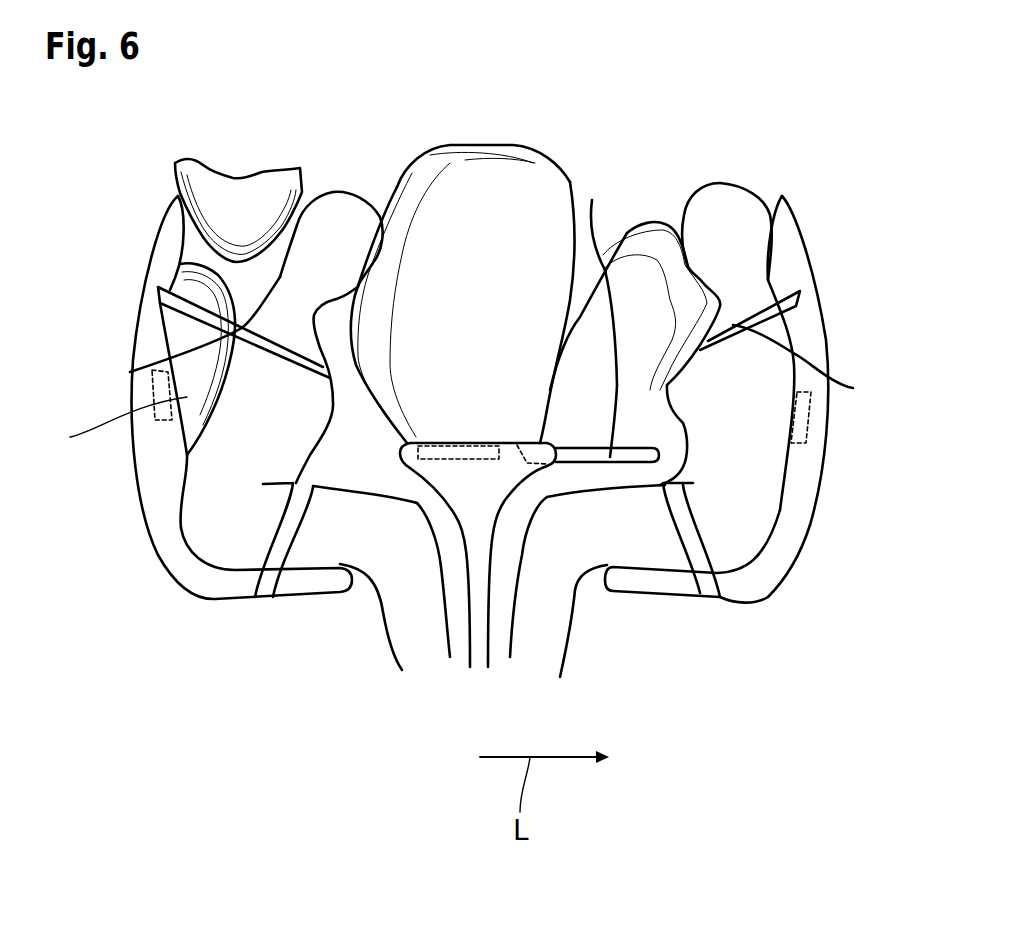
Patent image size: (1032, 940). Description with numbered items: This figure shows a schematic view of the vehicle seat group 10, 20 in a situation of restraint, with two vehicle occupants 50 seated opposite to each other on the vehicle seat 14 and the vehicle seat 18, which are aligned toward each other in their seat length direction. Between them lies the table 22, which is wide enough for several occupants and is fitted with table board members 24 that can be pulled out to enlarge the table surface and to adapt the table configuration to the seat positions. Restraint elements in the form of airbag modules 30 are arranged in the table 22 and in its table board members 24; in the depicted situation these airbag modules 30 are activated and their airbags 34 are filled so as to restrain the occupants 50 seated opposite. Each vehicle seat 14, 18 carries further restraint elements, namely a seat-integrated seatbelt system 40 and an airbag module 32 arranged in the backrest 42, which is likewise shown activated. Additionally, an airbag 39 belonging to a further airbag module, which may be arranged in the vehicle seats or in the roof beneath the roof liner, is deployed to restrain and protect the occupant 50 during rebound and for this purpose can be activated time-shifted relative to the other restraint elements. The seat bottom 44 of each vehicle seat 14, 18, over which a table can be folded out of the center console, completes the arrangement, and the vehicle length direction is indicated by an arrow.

The vehicle seat group 10 is at (360, 742).
The backrest 20 is at (360, 742).
The vehicle seat 14 is at (785, 243).
The vehicle seat 18 is at (167, 240).
The table 22 is at (480, 428).
The table board member 24 is at (592, 200).
The airbag module 30 is at (440, 450).
The airbag module 32 is at (153, 387).
The airbag 34 is at (503, 203).
The airbag 39 is at (233, 185).
The seat-integrated seatbelt system 40 is at (130, 372).
The backrest 42 is at (143, 437).
The seat bottom 44 is at (213, 592).
The vehicle occupant 50 is at (335, 200).